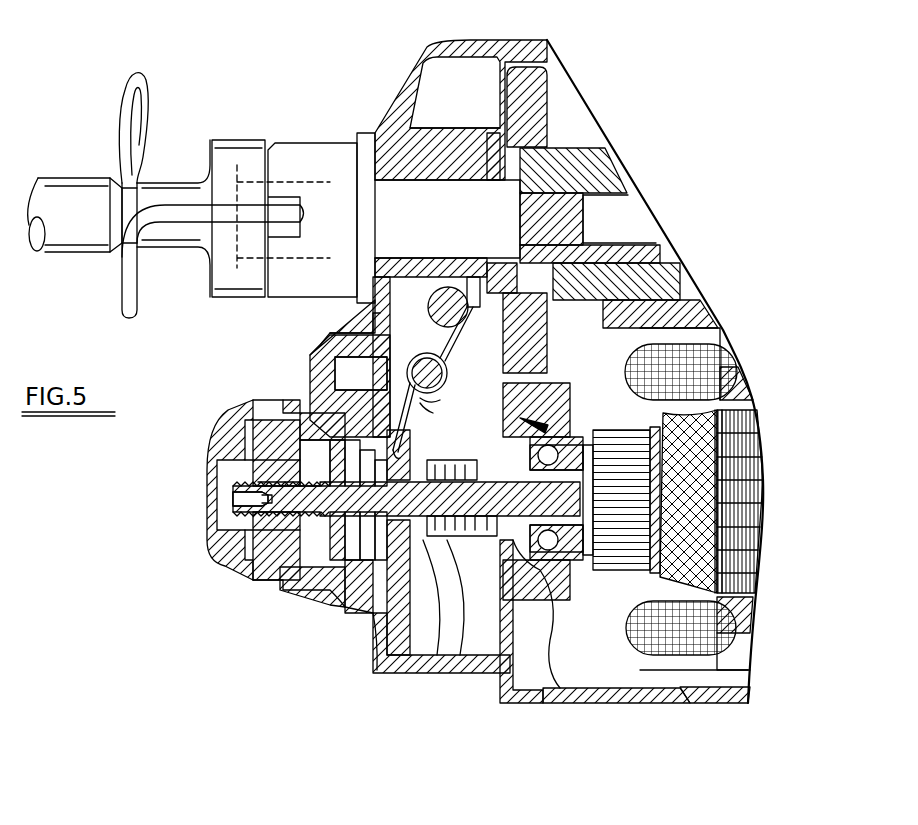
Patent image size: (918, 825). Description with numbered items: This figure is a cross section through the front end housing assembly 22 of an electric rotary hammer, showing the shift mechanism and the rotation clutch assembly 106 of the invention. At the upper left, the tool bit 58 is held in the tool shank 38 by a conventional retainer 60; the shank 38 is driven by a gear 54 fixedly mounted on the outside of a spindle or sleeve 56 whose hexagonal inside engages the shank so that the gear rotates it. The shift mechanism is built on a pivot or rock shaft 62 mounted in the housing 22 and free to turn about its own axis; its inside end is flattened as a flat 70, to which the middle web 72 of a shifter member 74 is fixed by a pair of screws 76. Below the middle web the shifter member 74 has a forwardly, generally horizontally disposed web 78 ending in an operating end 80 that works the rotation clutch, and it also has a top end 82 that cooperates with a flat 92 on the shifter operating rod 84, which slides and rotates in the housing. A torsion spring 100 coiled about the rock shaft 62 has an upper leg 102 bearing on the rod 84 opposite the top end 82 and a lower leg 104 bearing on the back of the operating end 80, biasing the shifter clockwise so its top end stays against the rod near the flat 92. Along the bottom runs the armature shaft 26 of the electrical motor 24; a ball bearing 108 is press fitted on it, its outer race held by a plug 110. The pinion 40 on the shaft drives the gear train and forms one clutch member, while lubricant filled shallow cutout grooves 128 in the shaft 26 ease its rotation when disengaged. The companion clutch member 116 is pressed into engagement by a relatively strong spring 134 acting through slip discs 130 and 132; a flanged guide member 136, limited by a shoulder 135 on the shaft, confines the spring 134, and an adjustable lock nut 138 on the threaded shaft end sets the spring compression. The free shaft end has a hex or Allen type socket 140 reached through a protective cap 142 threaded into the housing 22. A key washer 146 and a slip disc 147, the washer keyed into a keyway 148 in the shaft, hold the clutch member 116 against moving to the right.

The front end housing assembly 22 is at (367, 660).
The electrical motor 24 is at (633, 577).
The armature shaft 26 is at (300, 535).
The tool shank 38 is at (620, 222).
The pinion 40 is at (430, 655).
The gear 54 is at (535, 103).
The spindle or sleeve 56 is at (605, 183).
The tool bit 58 is at (76, 190).
The retainer 60 is at (128, 95).
The pivot or rock shaft 62 is at (423, 377).
The flat 70 is at (373, 332).
The middle web 72 is at (440, 400).
The shifter member 74 is at (417, 417).
The screws 76 is at (450, 367).
The forwardly horizontally disposed web 78 is at (433, 413).
The operating end 80 is at (300, 462).
The top end 82 is at (445, 313).
The shifter operating rod 84 is at (468, 290).
The flat 92 is at (427, 307).
The torsion spring 100 is at (403, 362).
The upper leg 102 is at (520, 325).
The lower leg 104 is at (283, 400).
The rotation clutch assembly 106 is at (396, 585).
The ball bearing 108 is at (515, 580).
The plug 110 is at (557, 425).
The clutch member 116 is at (365, 570).
The shallow cutout grooves 128 is at (485, 520).
The slip disc 130 is at (370, 570).
The slip disc 132 is at (360, 560).
The spring 134 is at (335, 560).
The shoulder 135 is at (340, 555).
The flanged guide member 136 is at (300, 545).
The adjustable lock nut 138 is at (233, 560).
The hex or Allen type socket 140 is at (240, 497).
The protective cap 142 is at (207, 552).
The key washer 146 is at (380, 620).
The slip disc 147 is at (300, 457).
The keyway 148 is at (273, 468).